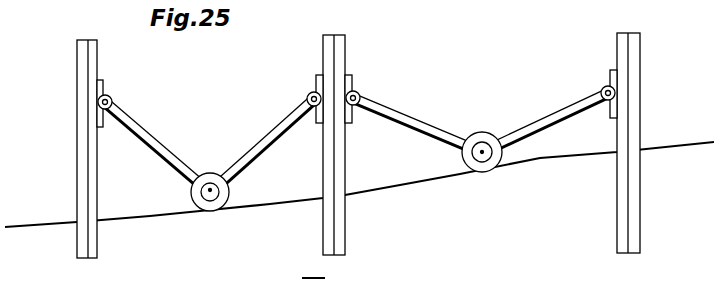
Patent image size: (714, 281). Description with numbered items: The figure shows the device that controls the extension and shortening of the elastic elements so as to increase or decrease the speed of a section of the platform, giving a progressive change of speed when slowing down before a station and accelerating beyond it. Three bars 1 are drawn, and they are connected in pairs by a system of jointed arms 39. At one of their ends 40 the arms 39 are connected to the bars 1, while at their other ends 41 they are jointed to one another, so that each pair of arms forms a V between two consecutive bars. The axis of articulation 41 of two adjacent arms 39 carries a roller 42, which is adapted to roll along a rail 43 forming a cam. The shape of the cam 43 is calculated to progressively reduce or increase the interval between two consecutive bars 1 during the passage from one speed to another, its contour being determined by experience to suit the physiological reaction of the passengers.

The bar 1 is at (81, 58).
The jointed arm 39 is at (527, 125).
The end of arm connected to bar 40 is at (110, 98).
The axis of articulation 41 is at (210, 190).
The roller 42 is at (226, 194).
The rail forming a cam 43 is at (565, 162).